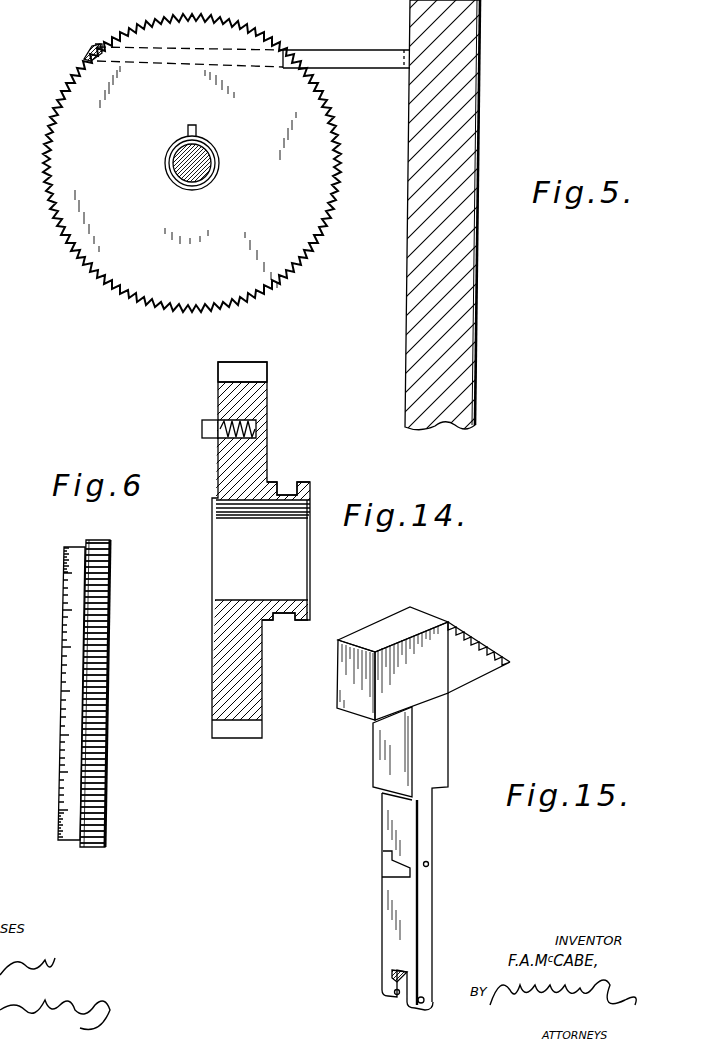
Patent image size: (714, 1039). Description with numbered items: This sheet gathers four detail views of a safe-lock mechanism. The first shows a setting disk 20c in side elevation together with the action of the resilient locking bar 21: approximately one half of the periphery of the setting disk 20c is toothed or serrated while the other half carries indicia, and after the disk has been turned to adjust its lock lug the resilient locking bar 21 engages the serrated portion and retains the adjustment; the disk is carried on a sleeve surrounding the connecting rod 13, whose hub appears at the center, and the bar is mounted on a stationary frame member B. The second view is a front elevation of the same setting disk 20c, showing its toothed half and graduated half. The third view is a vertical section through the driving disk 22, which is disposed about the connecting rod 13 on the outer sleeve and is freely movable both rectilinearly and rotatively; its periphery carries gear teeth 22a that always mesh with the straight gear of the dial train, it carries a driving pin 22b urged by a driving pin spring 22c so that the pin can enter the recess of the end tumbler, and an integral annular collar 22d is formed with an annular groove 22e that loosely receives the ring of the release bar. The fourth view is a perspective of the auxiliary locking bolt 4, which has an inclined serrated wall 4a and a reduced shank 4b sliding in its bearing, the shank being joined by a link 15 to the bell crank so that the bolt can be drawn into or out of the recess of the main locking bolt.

In FIG. 5, the resilient locking bar 21 is at (89, 46).
In FIG. 5, the connecting rod 13 is at (186, 176).
In FIG. 5, the setting disk 20c is at (108, 267).
In FIG. 6, the setting disk 20c is at (57, 705).
In FIG. 5, the frame bar B is at (473, 338).
In FIG. 14, the driving disk 22 is at (218, 692).
In FIG. 14, the gear teeth 22a is at (248, 372).
In FIG. 14, the driving pin 22b is at (203, 430).
In FIG. 14, the driving pin spring 22c is at (243, 441).
In FIG. 14, the annular collar 22d is at (296, 622).
In FIG. 14, the annular groove 22e is at (288, 493).
In FIG. 15, the auxiliary locking bolt 4 is at (386, 625).
In FIG. 15, the inclined serrated wall 4a is at (483, 644).
In FIG. 15, the reduced shank 4b is at (433, 748).
In FIG. 15, the link 15 is at (388, 925).